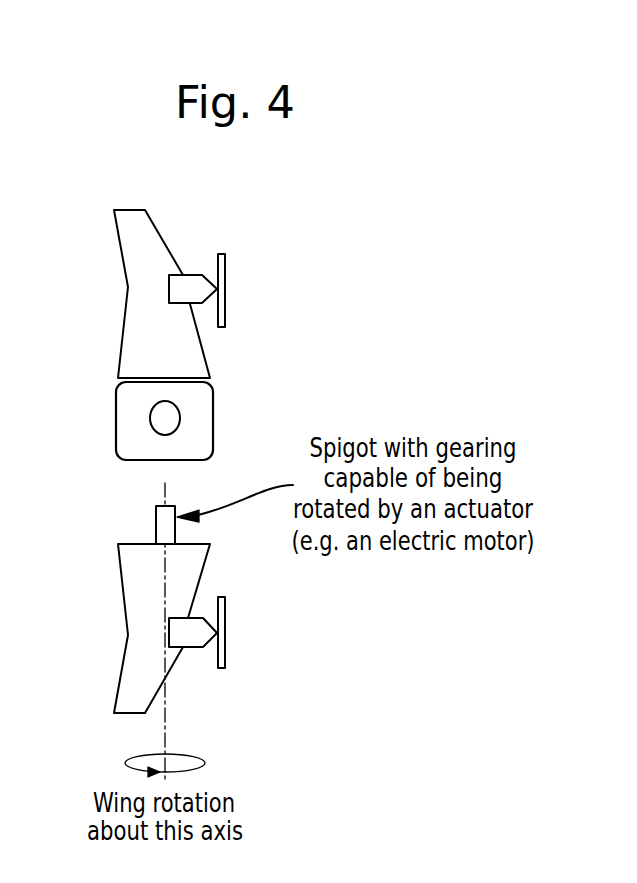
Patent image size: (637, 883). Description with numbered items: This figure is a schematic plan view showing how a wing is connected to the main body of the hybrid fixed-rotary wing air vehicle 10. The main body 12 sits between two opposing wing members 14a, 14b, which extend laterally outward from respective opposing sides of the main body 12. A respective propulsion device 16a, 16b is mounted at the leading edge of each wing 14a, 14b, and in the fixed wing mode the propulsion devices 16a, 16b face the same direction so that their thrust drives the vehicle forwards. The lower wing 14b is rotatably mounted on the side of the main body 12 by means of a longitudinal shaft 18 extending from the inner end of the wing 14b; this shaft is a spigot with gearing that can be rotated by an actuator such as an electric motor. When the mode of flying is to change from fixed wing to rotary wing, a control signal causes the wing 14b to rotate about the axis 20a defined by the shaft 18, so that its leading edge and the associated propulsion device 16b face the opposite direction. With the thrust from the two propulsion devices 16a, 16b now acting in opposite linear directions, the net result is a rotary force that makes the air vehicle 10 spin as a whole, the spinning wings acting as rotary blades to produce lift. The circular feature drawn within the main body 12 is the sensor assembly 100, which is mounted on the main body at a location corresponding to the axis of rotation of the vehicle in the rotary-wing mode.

The air vehicle 10 is at (290, 243).
The main body 12 is at (132, 408).
The wing member 14a is at (137, 262).
The wing member 14b is at (143, 618).
The propulsion device 16a is at (222, 304).
The propulsion device 16b is at (222, 647).
The longitudinal shaft 18 is at (158, 528).
The axis 20a is at (165, 728).
The sensor assembly 100 is at (170, 417).